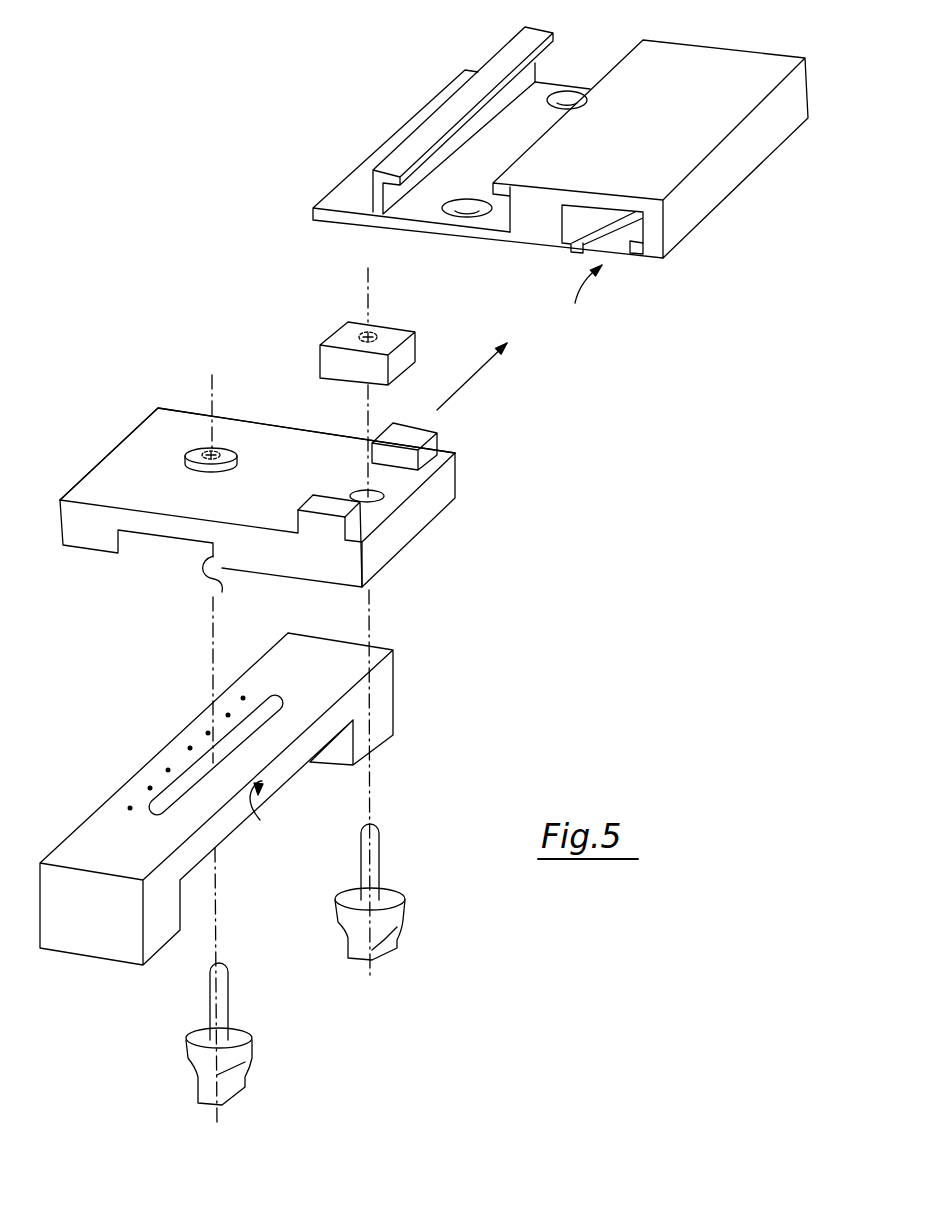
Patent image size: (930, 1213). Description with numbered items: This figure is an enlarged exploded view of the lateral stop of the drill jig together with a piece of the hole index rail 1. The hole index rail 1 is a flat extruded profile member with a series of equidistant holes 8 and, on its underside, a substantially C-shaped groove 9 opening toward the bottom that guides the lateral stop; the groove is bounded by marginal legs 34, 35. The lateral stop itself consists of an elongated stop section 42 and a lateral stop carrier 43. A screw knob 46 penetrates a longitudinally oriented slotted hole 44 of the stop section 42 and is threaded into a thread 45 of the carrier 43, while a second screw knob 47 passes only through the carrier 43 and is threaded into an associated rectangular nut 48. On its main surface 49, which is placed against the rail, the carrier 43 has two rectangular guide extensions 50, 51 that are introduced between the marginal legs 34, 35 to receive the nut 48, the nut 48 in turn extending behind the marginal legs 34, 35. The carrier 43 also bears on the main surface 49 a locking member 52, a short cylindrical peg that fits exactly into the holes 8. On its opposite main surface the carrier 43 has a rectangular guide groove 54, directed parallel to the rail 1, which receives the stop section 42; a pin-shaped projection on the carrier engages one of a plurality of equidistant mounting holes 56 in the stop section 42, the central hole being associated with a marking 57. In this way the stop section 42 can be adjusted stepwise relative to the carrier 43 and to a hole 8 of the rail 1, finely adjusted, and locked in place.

The hole index rail 1 is at (757, 147).
The holes 8 is at (573, 93).
The C-shaped groove 9 is at (581, 302).
The marginal leg 34 is at (567, 247).
The marginal leg 35 is at (637, 260).
The elongated stop section 42 is at (379, 678).
The lateral stop carrier 43 is at (403, 527).
The slotted hole 44 is at (155, 796).
The thread 45 is at (203, 453).
The screw knob 46 is at (187, 1082).
The screw knob 47 is at (393, 917).
The rectangular nut 48 is at (330, 358).
The main surface 49 is at (115, 478).
The rectangular guide extension 50 is at (317, 510).
The rectangular guide extension 51 is at (405, 437).
The locking member 52 is at (187, 457).
The guide groove 54 is at (230, 591).
The mounting holes 56 is at (190, 747).
The marking 57 is at (269, 820).